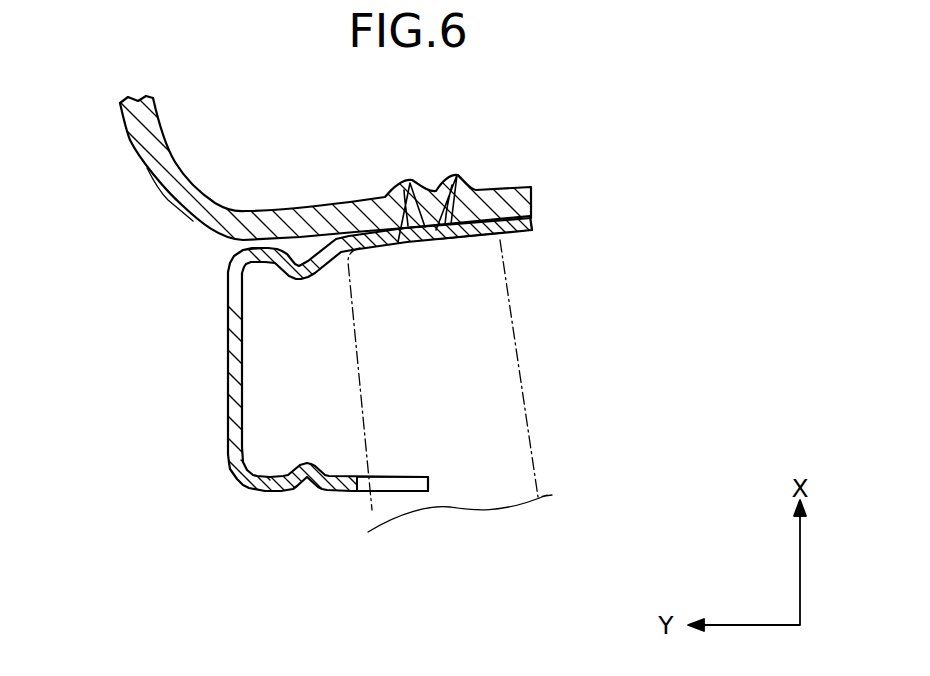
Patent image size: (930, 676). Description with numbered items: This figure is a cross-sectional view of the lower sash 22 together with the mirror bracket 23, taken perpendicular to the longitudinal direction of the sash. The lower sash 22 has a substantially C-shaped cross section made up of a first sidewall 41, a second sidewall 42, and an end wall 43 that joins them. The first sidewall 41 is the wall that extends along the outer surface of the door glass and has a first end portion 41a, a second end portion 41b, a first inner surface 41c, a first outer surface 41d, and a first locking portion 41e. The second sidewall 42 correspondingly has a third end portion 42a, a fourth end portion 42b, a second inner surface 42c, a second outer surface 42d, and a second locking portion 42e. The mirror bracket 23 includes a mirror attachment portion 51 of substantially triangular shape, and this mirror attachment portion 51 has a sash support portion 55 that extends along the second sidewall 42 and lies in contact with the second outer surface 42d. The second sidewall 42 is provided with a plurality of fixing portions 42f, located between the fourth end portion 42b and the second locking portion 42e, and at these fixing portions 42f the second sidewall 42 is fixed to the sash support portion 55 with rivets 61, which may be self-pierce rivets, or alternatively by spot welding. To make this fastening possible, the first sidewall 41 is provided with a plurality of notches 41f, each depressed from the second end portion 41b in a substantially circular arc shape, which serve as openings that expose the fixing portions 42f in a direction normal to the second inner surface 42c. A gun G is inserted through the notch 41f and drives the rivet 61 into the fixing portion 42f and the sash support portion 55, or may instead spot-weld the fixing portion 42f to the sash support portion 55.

The lower sash 22 is at (172, 510).
The mirror bracket 23 is at (116, 138).
The first sidewall 41 is at (322, 505).
The first end portion 41a is at (232, 492).
The second end portion 41b is at (428, 484).
The first inner surface 41c is at (335, 478).
The first outer surface 41d is at (339, 480).
The first locking portion 41e is at (228, 450).
The notch 41f is at (394, 488).
The second sidewall 42 is at (537, 243).
The third end portion 42a is at (230, 248).
The fourth end portion 42b is at (535, 223).
The second inner surface 42c is at (480, 240).
The second outer surface 42d is at (503, 216).
The second locking portion 42e is at (228, 286).
The fixing portion 42f is at (467, 240).
The end wall 43 is at (228, 368).
The mirror attachment portion 51 is at (137, 160).
The sash support portion 55 is at (350, 203).
The rivet 61 is at (427, 240).
The gun G is at (528, 378).